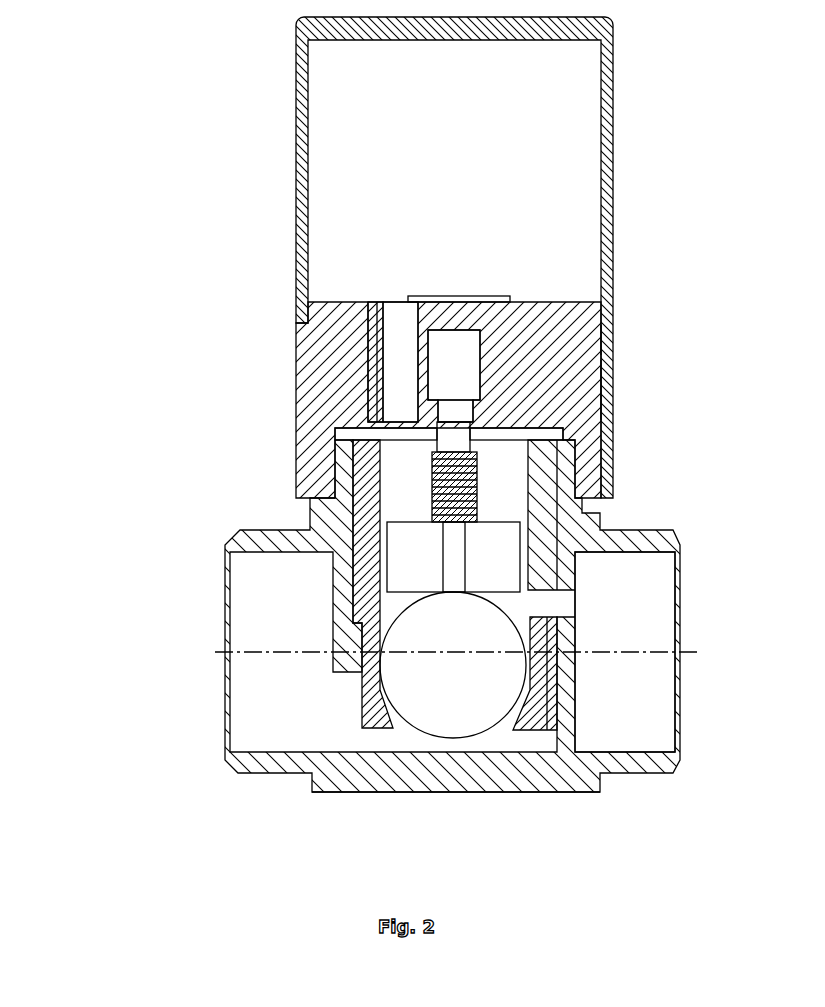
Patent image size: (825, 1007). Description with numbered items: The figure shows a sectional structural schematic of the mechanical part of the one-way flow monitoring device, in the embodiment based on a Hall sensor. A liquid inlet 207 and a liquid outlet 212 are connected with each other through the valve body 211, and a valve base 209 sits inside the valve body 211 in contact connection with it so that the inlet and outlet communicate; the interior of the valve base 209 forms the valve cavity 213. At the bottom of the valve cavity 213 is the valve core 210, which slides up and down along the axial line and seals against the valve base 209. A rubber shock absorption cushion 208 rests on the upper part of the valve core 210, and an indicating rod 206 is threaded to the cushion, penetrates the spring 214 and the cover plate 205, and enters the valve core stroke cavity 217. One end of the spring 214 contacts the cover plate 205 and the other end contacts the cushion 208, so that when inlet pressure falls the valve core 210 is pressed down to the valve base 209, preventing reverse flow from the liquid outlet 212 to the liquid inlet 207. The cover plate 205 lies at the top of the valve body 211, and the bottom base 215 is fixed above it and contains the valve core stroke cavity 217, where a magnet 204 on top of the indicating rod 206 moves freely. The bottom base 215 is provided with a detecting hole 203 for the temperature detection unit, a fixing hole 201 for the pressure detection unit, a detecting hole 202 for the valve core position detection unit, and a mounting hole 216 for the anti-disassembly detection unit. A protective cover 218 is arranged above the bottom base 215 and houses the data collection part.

The fixing hole 201 is at (447, 297).
The detecting hole 202 is at (405, 317).
The detecting hole 203 is at (365, 347).
The magnet 204 is at (438, 410).
The cover plate 205 is at (345, 432).
The indicating rod 206 is at (432, 450).
The liquid inlet 207 is at (268, 536).
The rubber shock absorption cushion 208 is at (378, 577).
The valve base 209 is at (358, 727).
The valve core 210 is at (432, 743).
The valve body 211 is at (537, 794).
The liquid outlet 212 is at (673, 538).
The valve cavity 213 is at (505, 505).
The spring 214 is at (470, 477).
The bottom base 215 is at (597, 388).
The mounting hole 216 is at (608, 338).
The valve core stroke cavity 217 is at (475, 360).
The protective cover 218 is at (608, 150).